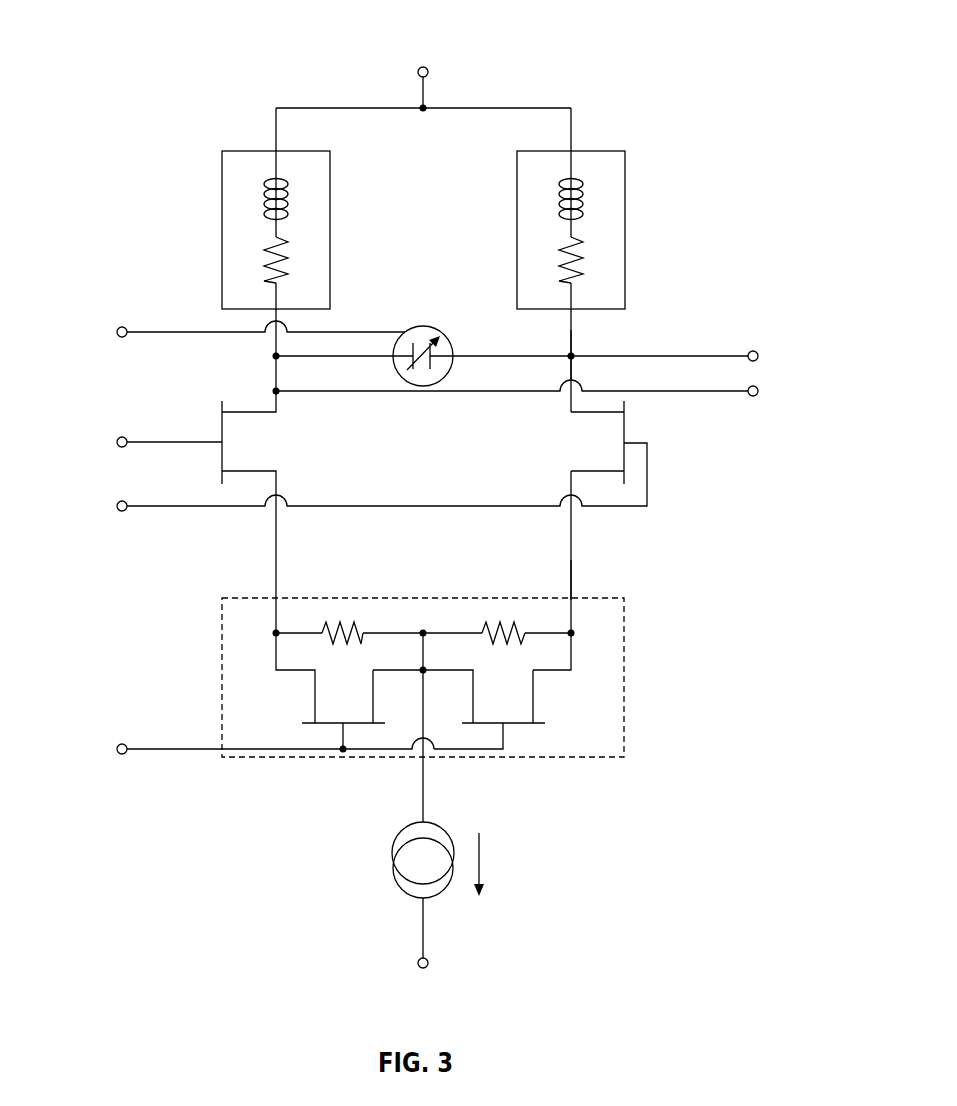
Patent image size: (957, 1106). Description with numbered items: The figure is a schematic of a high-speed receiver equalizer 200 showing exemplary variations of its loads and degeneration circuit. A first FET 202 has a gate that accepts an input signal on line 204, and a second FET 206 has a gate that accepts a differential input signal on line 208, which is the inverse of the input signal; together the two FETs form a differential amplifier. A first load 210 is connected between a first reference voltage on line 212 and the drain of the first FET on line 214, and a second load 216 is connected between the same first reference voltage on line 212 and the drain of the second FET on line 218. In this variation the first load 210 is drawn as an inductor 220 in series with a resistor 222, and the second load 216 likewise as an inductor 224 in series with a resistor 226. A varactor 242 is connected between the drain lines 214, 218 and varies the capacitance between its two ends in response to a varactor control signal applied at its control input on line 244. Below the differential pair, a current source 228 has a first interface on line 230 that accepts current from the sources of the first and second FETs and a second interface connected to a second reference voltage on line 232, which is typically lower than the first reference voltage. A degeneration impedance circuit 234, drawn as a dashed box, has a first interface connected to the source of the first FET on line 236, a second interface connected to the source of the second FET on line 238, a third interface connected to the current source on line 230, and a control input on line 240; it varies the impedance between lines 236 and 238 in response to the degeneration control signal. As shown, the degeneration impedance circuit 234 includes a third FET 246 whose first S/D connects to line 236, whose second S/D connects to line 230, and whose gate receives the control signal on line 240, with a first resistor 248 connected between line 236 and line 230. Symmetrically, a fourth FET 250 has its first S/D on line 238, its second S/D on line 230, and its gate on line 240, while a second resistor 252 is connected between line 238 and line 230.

The equalizer 200 is at (686, 52).
The first FET 202 is at (286, 445).
The input signal line 204 is at (170, 443).
The second FET 206 is at (542, 445).
The differential input signal line 208 is at (170, 508).
The first load 210 is at (261, 249).
The first reference voltage line 212 is at (335, 108).
The first FET drain line 214 is at (274, 391).
The second load 216 is at (586, 260).
The second FET drain line 218 is at (575, 345).
The inductor 220 is at (288, 196).
The resistor 222 is at (288, 254).
The inductor 224 is at (559, 196).
The resistor 226 is at (559, 254).
The current source 228 is at (394, 871).
The current source first interface line 230 is at (425, 795).
The second reference voltage line 232 is at (425, 935).
The degeneration impedance circuit 234 is at (504, 661).
The first FET source line 236 is at (275, 566).
The second FET source line 238 is at (573, 567).
The control input line 240 is at (170, 751).
The varactor 242 is at (425, 326).
The varactor control input line 244 is at (185, 331).
The third FET 246 is at (305, 701).
The first resistor 248 is at (352, 625).
The fourth FET 250 is at (541, 698).
The second resistor 252 is at (512, 625).